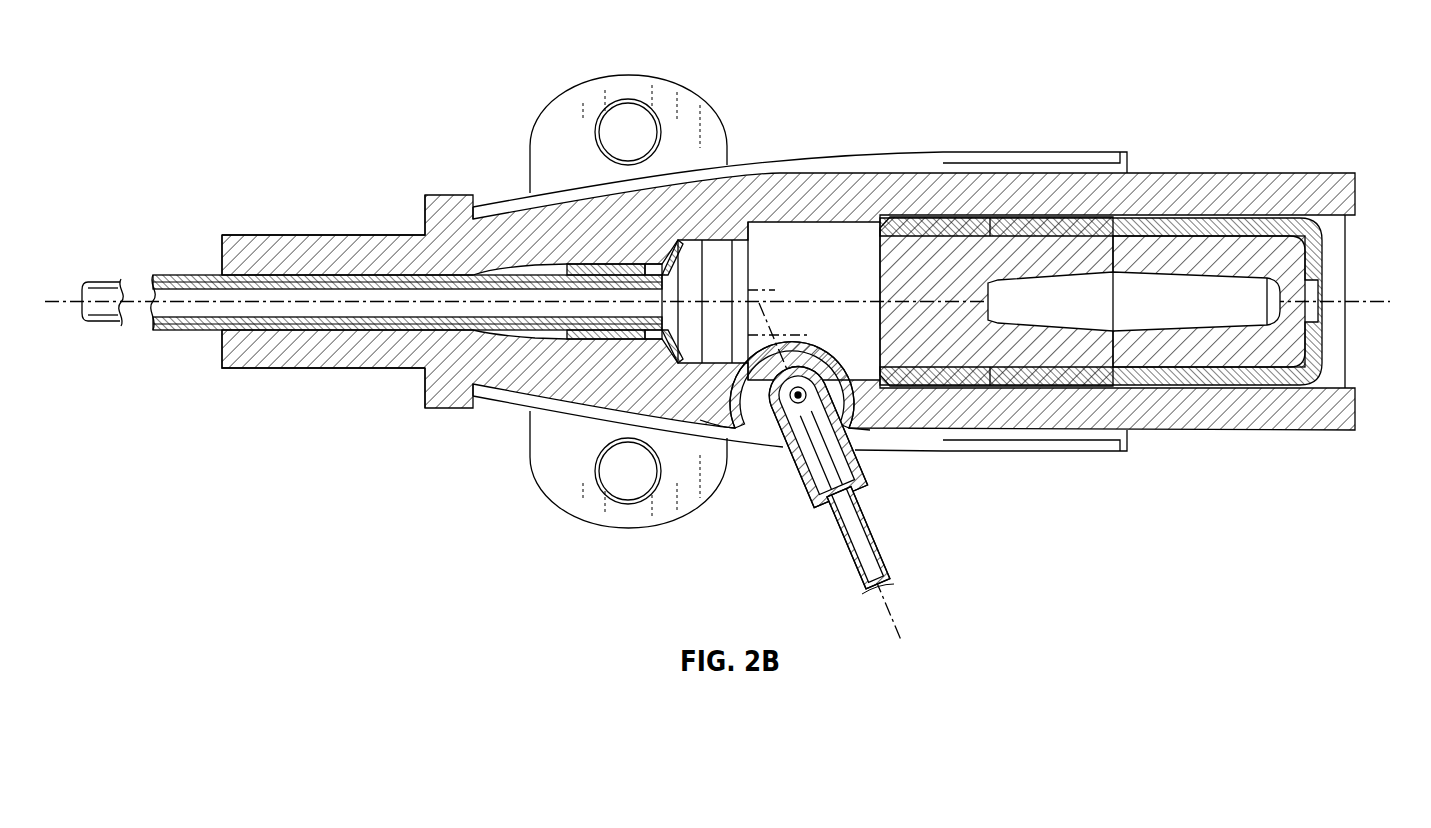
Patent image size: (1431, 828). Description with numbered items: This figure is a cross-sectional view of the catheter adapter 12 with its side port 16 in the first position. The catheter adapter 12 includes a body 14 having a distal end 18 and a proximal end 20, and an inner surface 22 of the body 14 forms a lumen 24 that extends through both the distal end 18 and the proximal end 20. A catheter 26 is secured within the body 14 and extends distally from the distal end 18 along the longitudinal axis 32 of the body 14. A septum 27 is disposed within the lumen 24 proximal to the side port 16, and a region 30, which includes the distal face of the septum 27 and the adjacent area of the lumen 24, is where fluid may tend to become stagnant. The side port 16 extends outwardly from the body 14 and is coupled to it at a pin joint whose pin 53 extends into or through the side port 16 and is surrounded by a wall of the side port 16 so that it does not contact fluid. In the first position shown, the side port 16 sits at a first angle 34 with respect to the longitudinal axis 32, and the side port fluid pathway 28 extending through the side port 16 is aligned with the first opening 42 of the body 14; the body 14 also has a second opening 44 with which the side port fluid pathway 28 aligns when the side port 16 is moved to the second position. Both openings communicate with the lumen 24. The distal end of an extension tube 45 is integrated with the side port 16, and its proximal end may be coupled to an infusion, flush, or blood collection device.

The catheter adapter 12 is at (399, 89).
The body 14 is at (782, 161).
The side port 16 is at (843, 480).
The distal end 18 is at (222, 345).
The proximal end 20 is at (1357, 194).
The inner surface 22 is at (803, 222).
The lumen 24 is at (787, 258).
The catheter 26 is at (158, 276).
The septum 27 is at (1215, 242).
The side port fluid pathway 28 is at (810, 447).
The region 30 is at (868, 248).
The longitudinal axis 32 is at (55, 302).
The first angle 34 is at (778, 317).
The first opening 42 is at (727, 425).
The second opening 44 is at (820, 359).
The extension tube 45 is at (878, 538).
The pin 53 is at (860, 450).